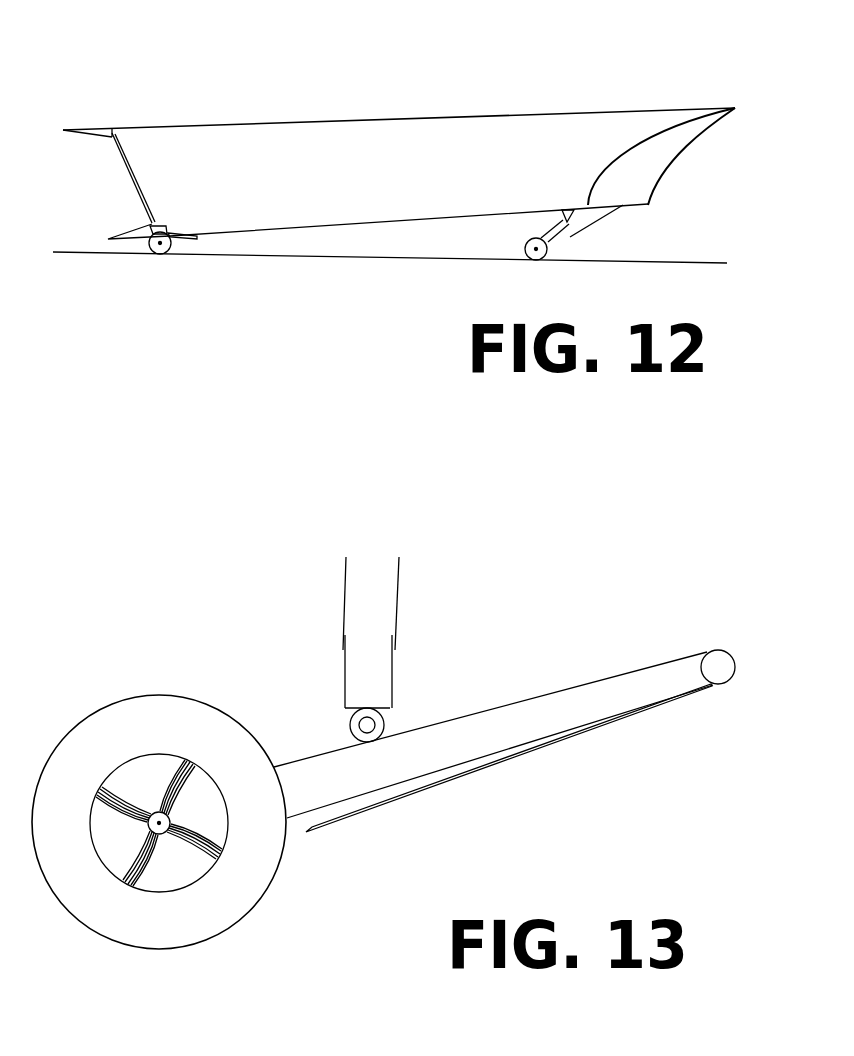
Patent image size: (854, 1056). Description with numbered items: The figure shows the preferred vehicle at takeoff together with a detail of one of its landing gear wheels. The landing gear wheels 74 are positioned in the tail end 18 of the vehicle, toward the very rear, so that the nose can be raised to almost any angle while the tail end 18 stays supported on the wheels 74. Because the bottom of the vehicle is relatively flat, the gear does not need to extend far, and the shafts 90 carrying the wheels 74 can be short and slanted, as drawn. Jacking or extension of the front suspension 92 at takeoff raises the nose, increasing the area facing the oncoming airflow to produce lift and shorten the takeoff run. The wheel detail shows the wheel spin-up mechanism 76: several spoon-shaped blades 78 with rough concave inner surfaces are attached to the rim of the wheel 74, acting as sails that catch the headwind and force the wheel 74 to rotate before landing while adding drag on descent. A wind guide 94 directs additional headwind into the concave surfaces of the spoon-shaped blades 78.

In FIG. 12, the tail end 18 is at (118, 80).
In FIG. 12, the wheel 74 is at (155, 251).
In FIG. 13, the wheel 74 is at (105, 733).
In FIG. 13, the wheel spin-up mechanism 76 is at (147, 784).
In FIG. 13, the spoon-shaped blade 78 is at (212, 850).
In FIG. 12, the shaft 90 is at (197, 238).
In FIG. 12, the front suspension 92 is at (573, 214).
In FIG. 13, the wind guide 94 is at (367, 810).